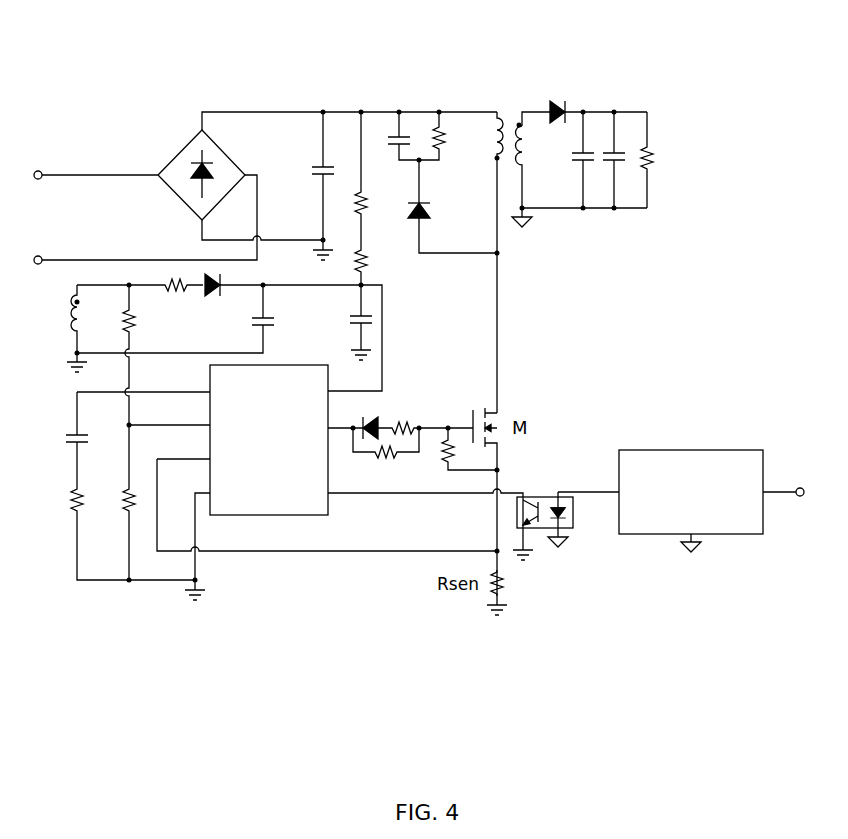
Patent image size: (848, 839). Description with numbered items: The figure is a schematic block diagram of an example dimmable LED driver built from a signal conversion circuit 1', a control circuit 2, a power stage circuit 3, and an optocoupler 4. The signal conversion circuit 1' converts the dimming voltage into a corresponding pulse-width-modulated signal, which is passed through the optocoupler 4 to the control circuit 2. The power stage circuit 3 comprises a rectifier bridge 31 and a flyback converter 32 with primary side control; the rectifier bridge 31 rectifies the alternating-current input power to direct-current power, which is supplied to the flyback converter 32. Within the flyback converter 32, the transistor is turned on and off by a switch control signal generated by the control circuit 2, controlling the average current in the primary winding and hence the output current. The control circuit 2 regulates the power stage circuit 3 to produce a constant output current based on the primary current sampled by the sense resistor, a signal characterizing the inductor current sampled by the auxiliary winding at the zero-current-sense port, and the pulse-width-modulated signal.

The power stage circuit 3 is at (268, 28).
The rectifier bridge 31 is at (170, 158).
The flyback converter 32 is at (332, 90).
The control circuit 2 is at (261, 515).
The optocoupler 4 is at (573, 512).
The signal conversion circuit 1' is at (714, 472).